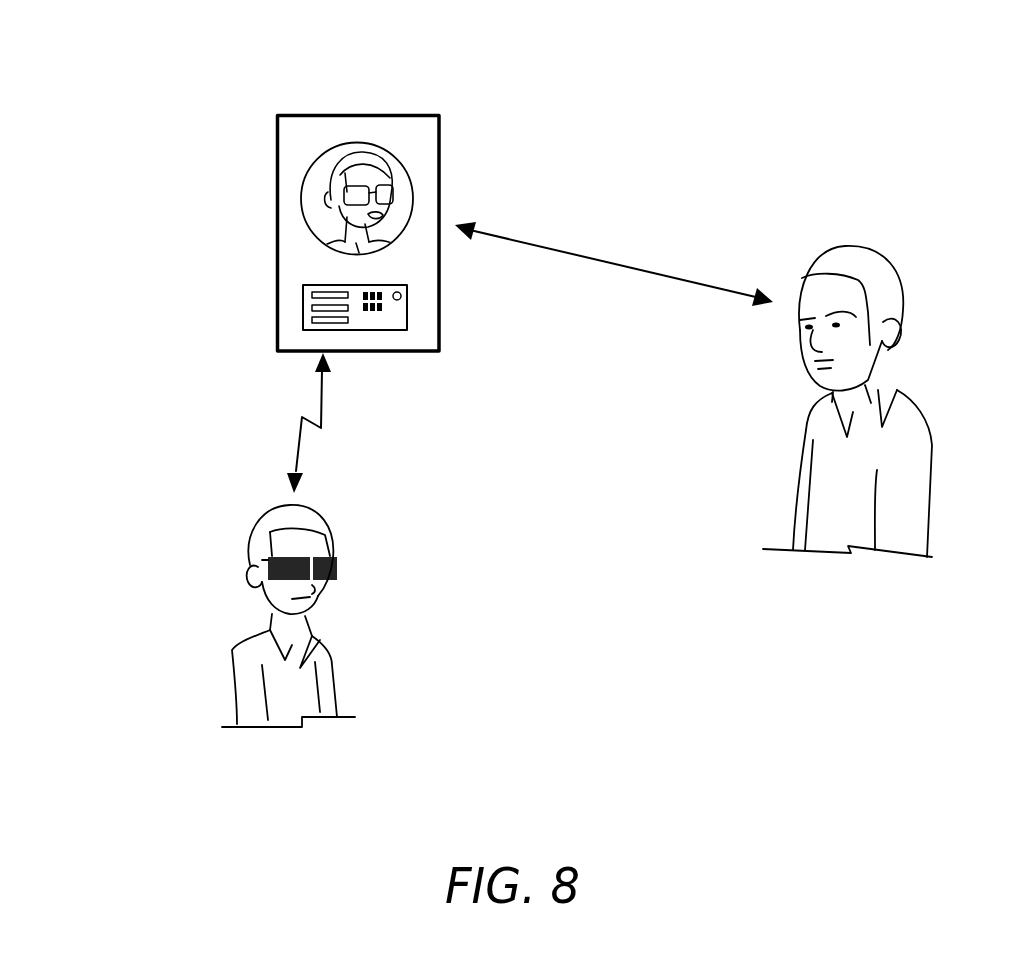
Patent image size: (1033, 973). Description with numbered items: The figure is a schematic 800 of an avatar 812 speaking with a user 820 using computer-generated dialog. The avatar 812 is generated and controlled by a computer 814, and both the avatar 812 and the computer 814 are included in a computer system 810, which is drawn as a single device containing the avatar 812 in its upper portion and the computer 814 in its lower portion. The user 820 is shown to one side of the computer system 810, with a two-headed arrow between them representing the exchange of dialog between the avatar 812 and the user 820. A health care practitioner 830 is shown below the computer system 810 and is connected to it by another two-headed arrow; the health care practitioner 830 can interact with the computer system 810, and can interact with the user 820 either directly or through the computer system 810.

The schematic 800 is at (138, 83).
The computer system 810 is at (378, 114).
The avatar 812 is at (301, 185).
The computer 814 is at (303, 305).
The user 820 is at (818, 240).
The health care practitioner 830 is at (213, 578).